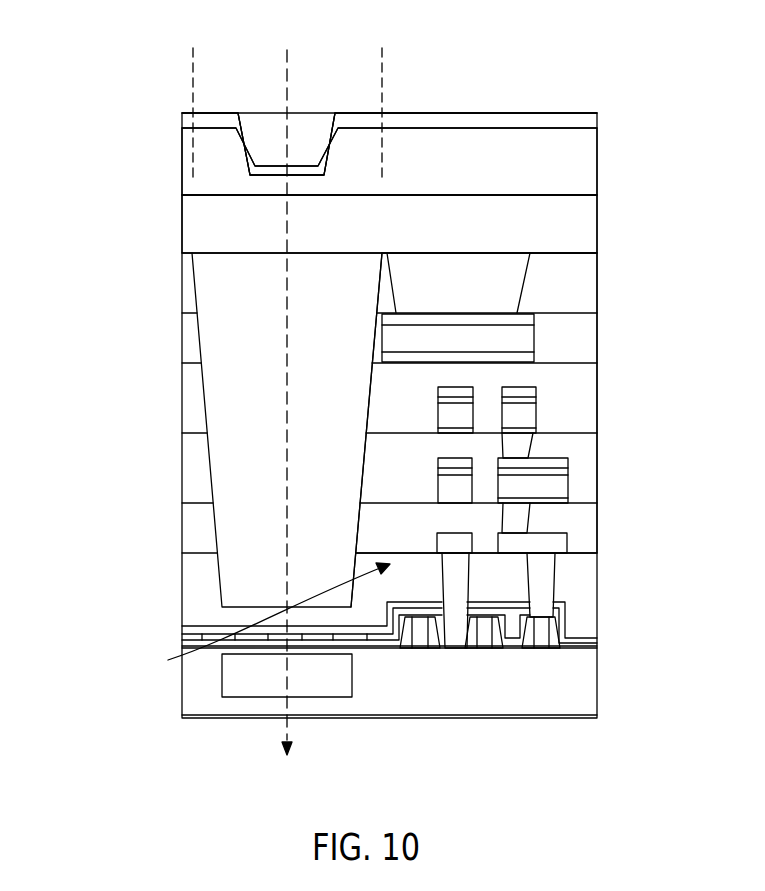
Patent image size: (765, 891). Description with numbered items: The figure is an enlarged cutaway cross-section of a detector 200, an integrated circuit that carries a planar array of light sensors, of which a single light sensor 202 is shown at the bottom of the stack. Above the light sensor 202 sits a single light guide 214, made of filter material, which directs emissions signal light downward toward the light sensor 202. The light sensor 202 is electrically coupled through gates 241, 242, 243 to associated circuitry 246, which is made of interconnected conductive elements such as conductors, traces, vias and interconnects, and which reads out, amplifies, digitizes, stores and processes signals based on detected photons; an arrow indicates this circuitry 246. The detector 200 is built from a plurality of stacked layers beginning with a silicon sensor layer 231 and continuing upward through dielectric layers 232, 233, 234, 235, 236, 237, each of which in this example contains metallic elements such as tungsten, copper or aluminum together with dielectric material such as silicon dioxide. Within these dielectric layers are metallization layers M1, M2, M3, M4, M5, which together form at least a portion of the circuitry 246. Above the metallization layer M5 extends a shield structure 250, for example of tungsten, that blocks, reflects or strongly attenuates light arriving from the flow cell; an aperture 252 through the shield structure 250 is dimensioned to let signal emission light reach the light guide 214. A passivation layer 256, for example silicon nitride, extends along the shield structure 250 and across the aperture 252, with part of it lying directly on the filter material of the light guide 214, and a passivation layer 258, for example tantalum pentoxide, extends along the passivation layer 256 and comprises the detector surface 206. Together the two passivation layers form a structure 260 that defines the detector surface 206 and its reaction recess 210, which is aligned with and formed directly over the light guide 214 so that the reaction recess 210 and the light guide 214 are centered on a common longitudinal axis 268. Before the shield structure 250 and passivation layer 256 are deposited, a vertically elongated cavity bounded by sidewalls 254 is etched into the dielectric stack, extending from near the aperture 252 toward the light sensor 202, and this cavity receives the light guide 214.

The detector 200 is at (132, 113).
The light sensor 202 is at (260, 697).
The detector surface 206 is at (558, 113).
The reaction recess 210 is at (300, 118).
The light guide 214 is at (347, 399).
The sensor layer 231 is at (599, 715).
The dielectric layer 232 is at (599, 553).
The dielectric layer 233 is at (599, 503).
The dielectric layer 234 is at (599, 433).
The dielectric layer 235 is at (599, 363).
The dielectric layer 236 is at (599, 313).
The dielectric layer 237 is at (599, 253).
The gate 241 is at (407, 648).
The gate 242 is at (470, 648).
The gate 243 is at (528, 648).
The circuitry 246 is at (265, 617).
The shield structure 250 is at (590, 230).
The aperture 252 is at (382, 52).
The sidewalls 254 is at (366, 404).
The passivation layer 256 is at (592, 150).
The passivation layer 258 is at (592, 123).
The structure 260 is at (160, 113).
The longitudinal axis 268 is at (287, 110).
The metallization layer M1 is at (470, 598).
The metallization layer M2 is at (438, 532).
The metallization layer M3 is at (438, 488).
The metallization layer M4 is at (438, 413).
The metallization layer M5 is at (537, 338).